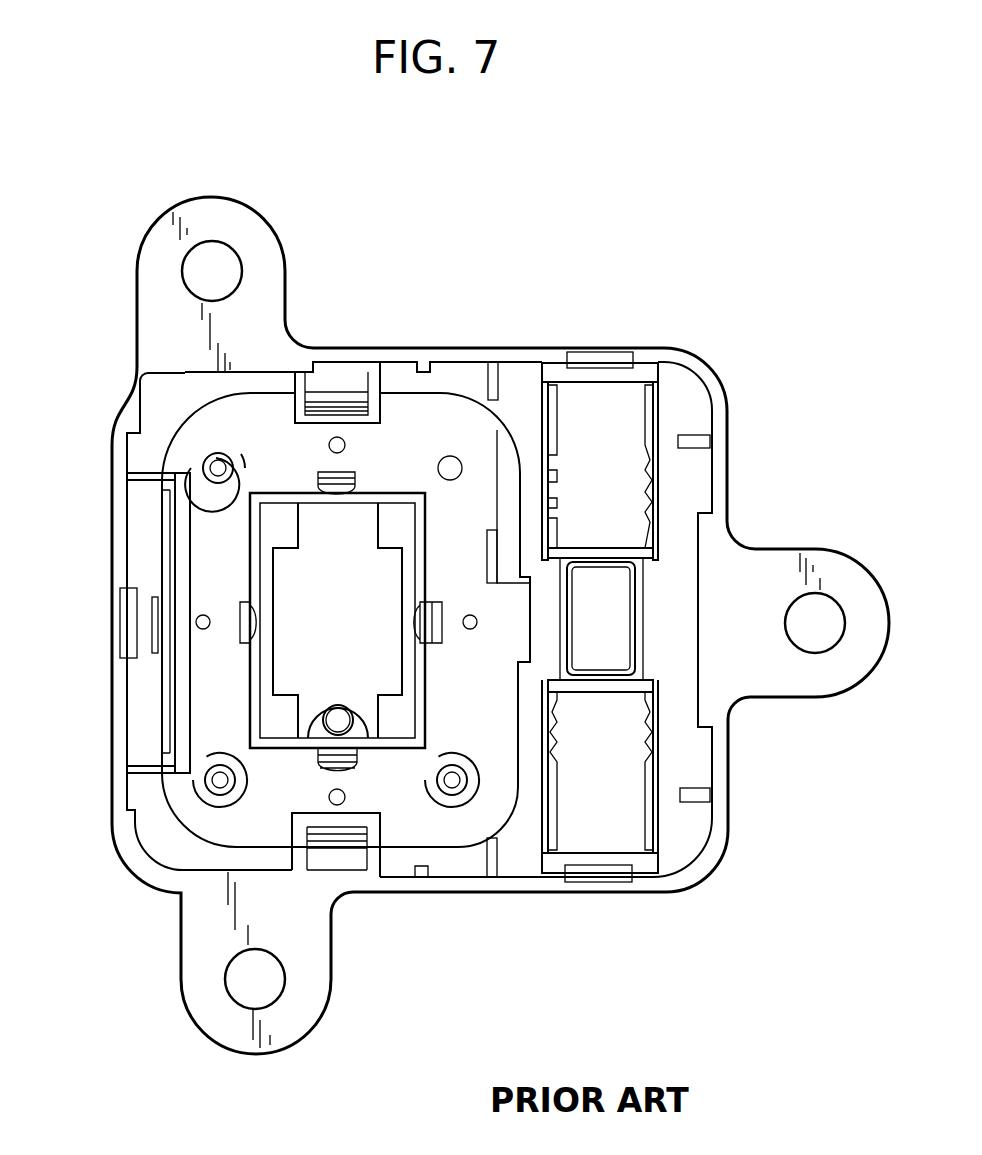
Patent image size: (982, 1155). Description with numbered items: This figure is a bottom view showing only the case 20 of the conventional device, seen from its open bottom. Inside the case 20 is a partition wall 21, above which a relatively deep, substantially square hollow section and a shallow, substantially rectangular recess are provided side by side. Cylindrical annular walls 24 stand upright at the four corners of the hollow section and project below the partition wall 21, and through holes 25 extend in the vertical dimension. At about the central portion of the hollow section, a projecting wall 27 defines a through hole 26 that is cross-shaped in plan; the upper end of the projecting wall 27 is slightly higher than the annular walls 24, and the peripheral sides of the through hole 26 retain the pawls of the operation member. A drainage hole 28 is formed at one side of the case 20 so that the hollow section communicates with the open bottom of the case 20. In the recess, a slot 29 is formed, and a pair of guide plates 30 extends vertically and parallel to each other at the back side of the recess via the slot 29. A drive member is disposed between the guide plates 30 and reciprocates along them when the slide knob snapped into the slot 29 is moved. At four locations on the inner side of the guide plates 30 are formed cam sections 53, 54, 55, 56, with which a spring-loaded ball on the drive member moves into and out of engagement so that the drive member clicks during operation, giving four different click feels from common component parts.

The case 20 is at (668, 340).
The partition wall 21 is at (450, 882).
The annular wall 24 is at (196, 788).
The through hole 25 is at (218, 470).
The through hole 26 is at (293, 678).
The projecting wall 27 is at (398, 775).
The drainage hole 28 is at (135, 669).
The slot 29 is at (618, 647).
The guide plate 30 is at (541, 403).
The cam section 53 is at (648, 463).
The cam section 54 is at (648, 748).
The cam section 55 is at (555, 747).
The cam section 56 is at (560, 463).